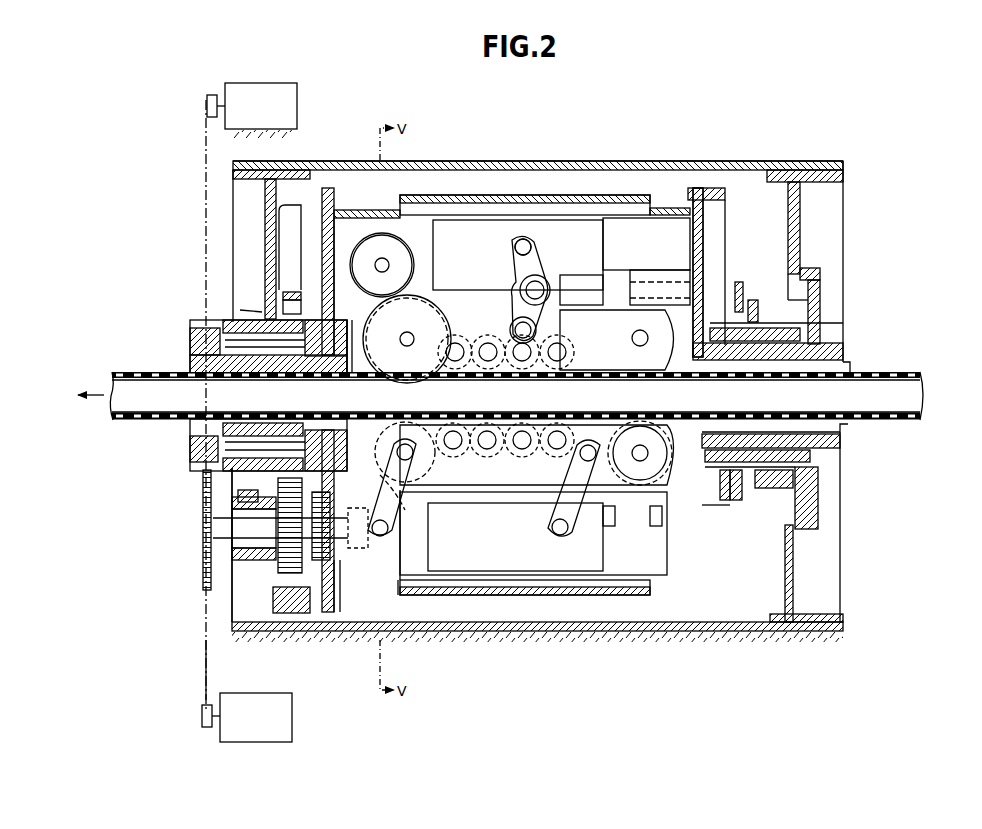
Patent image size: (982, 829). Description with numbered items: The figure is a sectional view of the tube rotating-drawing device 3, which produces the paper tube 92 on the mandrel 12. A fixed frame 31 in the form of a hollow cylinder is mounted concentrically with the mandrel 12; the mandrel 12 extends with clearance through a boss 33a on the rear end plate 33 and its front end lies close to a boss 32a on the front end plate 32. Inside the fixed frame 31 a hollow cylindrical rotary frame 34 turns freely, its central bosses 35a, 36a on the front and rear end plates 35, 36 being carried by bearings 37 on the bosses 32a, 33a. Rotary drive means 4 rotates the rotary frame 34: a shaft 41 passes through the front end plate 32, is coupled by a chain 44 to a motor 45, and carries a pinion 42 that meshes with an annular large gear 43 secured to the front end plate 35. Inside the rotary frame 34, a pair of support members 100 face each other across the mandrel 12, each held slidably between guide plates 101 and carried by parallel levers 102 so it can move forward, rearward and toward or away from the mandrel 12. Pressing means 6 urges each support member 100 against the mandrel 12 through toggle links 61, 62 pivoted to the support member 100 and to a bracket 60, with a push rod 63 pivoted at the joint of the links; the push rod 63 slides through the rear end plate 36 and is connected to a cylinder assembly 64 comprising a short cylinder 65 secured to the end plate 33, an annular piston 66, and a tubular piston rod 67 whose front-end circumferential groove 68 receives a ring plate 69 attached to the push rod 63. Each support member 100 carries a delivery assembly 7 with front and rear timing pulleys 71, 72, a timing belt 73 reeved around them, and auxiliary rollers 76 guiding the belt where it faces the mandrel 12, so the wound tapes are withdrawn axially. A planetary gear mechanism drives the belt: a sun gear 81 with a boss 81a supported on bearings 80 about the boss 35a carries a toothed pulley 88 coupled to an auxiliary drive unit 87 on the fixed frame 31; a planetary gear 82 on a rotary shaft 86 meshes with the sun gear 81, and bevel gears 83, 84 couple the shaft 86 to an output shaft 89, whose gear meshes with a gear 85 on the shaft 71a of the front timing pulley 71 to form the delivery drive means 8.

The tube rotating-drawing device 3 is at (862, 292).
The rotary drive means 4 is at (198, 582).
The pressing means 6 is at (462, 300).
The delivery assembly 7 is at (414, 412).
The delivery drive means 8 is at (362, 560).
The mandrel 12 is at (920, 406).
The fixed frame 31 is at (620, 162).
The front end plate 32 is at (264, 236).
The boss 32a is at (254, 307).
The rear end plate 33 is at (800, 240).
The boss 33a is at (822, 300).
The rotary frame 34 is at (430, 195).
The front end plate 35 is at (322, 602).
The central boss 35a is at (208, 328).
The rear end plate 36 is at (700, 250).
The central boss 36a is at (815, 345).
The bearing 37 is at (282, 296).
The shaft 41 is at (252, 560).
The pinion 42 is at (296, 262).
The annular large gear 43 is at (280, 500).
The chain 44 is at (205, 645).
The motor 45 is at (243, 700).
The bracket 60 is at (502, 248).
The toggle link 61 is at (515, 302).
The toggle link 62 is at (520, 268).
The push rod 63 is at (618, 285).
The cylinder assembly 64 is at (780, 492).
The short cylinder 65 is at (815, 540).
The annular piston 66 is at (822, 482).
The tubular piston rod 67 is at (744, 490).
The circumferential groove 68 is at (700, 430).
The ring plate 69 is at (750, 298).
The timing pulley 71 is at (349, 361).
The shaft 71a is at (384, 399).
The timing pulley 72 is at (670, 424).
The timing belt 73 is at (640, 372).
The auxiliary roller 76 is at (448, 420).
The bearing 80 is at (268, 361).
The sun gear 81 is at (250, 622).
The boss 81a is at (245, 416).
The planetary gear 82 is at (336, 614).
The bevel gear 83 is at (399, 555).
The bevel gear 84 is at (382, 240).
The gear 85 is at (338, 373).
The rotary shaft 86 is at (346, 614).
The auxiliary drive unit 87 is at (285, 128).
The toothed pulley 88 is at (200, 462).
The output shaft 89 is at (420, 530).
The paper tube 92 is at (912, 372).
The support member 100 is at (720, 522).
The guide plate 101 is at (570, 240).
The parallel lever 102 is at (418, 488).